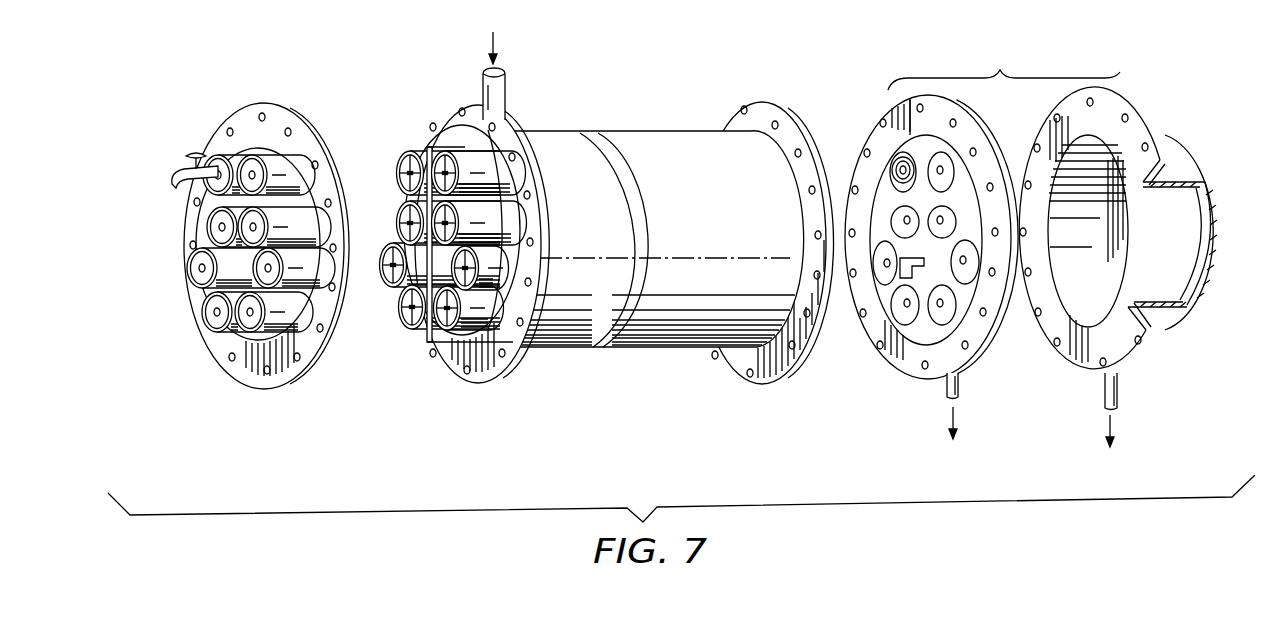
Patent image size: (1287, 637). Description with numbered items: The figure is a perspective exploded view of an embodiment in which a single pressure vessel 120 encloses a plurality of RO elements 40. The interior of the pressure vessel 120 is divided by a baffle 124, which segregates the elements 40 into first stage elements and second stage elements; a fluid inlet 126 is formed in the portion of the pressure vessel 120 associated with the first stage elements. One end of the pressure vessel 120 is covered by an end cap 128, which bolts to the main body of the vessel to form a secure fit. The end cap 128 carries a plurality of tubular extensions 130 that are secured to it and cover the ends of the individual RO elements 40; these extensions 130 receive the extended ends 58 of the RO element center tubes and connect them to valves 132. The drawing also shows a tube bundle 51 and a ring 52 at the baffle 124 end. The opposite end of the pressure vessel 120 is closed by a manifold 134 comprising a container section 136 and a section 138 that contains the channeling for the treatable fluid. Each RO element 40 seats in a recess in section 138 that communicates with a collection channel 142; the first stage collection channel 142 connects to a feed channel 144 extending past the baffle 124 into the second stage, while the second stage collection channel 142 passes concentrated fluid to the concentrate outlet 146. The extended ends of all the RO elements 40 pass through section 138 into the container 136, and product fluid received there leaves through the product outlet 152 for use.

The RO element 40 is at (442, 253).
The tube bundle 51 is at (372, 223).
The sealing ring 52 is at (540, 226).
The extended end of RO element center tube 58 is at (418, 333).
The pressure vessel 120 is at (661, 127).
The baffle 124 is at (437, 148).
The fluid inlet 126 is at (505, 78).
The end cap 128 is at (273, 118).
The tubular extension 130 is at (260, 343).
The valve 132 is at (180, 170).
The manifold 134 is at (969, 240).
The container section 136 is at (1190, 158).
The section containing channeling 138 is at (977, 348).
The collection channel 142 is at (893, 197).
The feed channel 144 is at (908, 270).
The concentrate outlet 146 is at (947, 380).
The product outlet 152 is at (1117, 382).